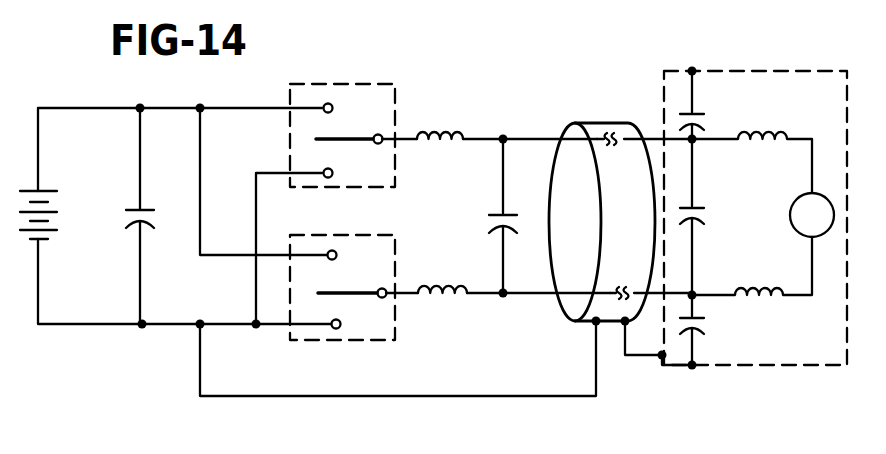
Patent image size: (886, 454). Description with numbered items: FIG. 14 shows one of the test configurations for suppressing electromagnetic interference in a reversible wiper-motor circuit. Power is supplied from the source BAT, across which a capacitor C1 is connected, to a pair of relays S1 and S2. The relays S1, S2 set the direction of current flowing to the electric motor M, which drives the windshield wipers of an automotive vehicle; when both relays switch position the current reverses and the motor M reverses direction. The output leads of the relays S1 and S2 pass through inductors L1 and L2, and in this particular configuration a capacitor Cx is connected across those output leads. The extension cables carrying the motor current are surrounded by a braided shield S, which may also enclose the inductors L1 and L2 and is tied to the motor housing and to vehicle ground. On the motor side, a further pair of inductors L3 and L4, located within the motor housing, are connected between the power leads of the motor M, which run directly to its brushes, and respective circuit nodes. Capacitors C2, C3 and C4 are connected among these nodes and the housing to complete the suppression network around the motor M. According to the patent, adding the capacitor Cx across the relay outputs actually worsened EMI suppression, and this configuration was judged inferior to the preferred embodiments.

The battery BAT is at (63, 215).
The capacitor C1 is at (154, 216).
The relay S1 is at (353, 135).
The relay S2 is at (354, 287).
The inductor L1 is at (507, 119).
The inductor L2 is at (514, 275).
The capacitor Cx is at (518, 216).
The braided shield S is at (603, 122).
The capacitor C2 is at (707, 105).
The capacitor C3 is at (710, 330).
The capacitor C4 is at (710, 217).
The inductor L3 is at (752, 147).
The inductor L4 is at (752, 266).
The electric motor M is at (812, 215).